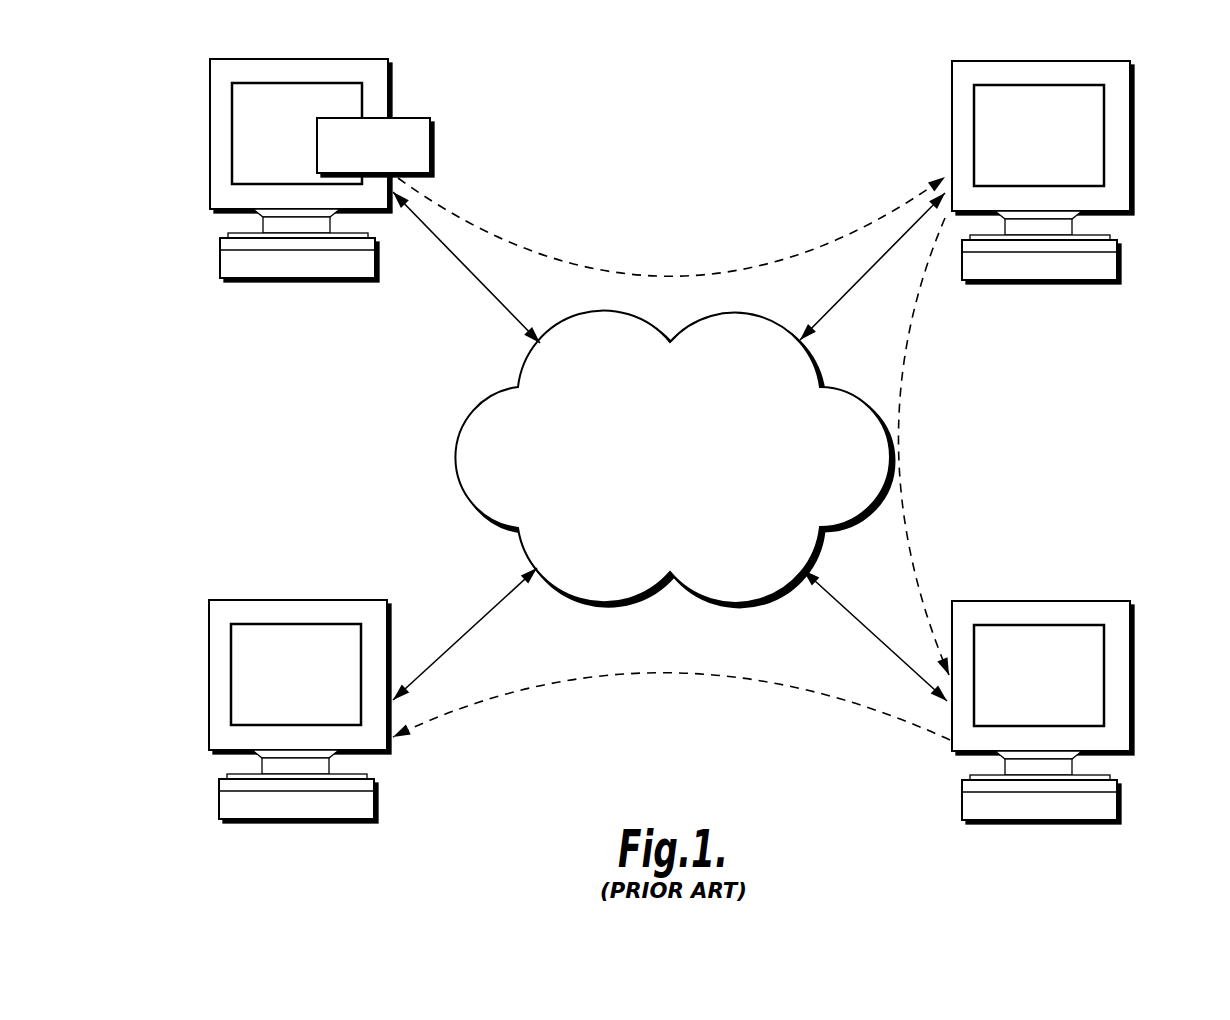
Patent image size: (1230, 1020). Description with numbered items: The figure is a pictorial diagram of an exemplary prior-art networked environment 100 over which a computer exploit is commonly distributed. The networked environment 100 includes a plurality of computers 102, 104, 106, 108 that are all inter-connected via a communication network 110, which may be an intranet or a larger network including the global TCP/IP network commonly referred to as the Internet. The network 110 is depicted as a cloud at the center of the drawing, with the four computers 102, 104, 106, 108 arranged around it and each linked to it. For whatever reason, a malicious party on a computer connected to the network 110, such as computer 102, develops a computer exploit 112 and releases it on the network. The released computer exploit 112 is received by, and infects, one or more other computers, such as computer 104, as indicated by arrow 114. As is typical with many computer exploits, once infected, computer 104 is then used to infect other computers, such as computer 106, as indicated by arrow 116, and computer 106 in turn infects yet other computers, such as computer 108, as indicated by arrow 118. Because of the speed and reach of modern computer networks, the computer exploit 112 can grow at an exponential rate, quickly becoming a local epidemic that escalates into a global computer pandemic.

The networked environment 100 is at (644, 81).
The computer 102 is at (209, 137).
The computer 104 is at (1135, 150).
The computer 106 is at (209, 695).
The computer 108 is at (1135, 708).
The communication network 110 is at (457, 437).
The computer exploit 112 is at (433, 163).
The arrow 114 is at (652, 275).
The arrow 116 is at (899, 462).
The arrow 118 is at (670, 675).